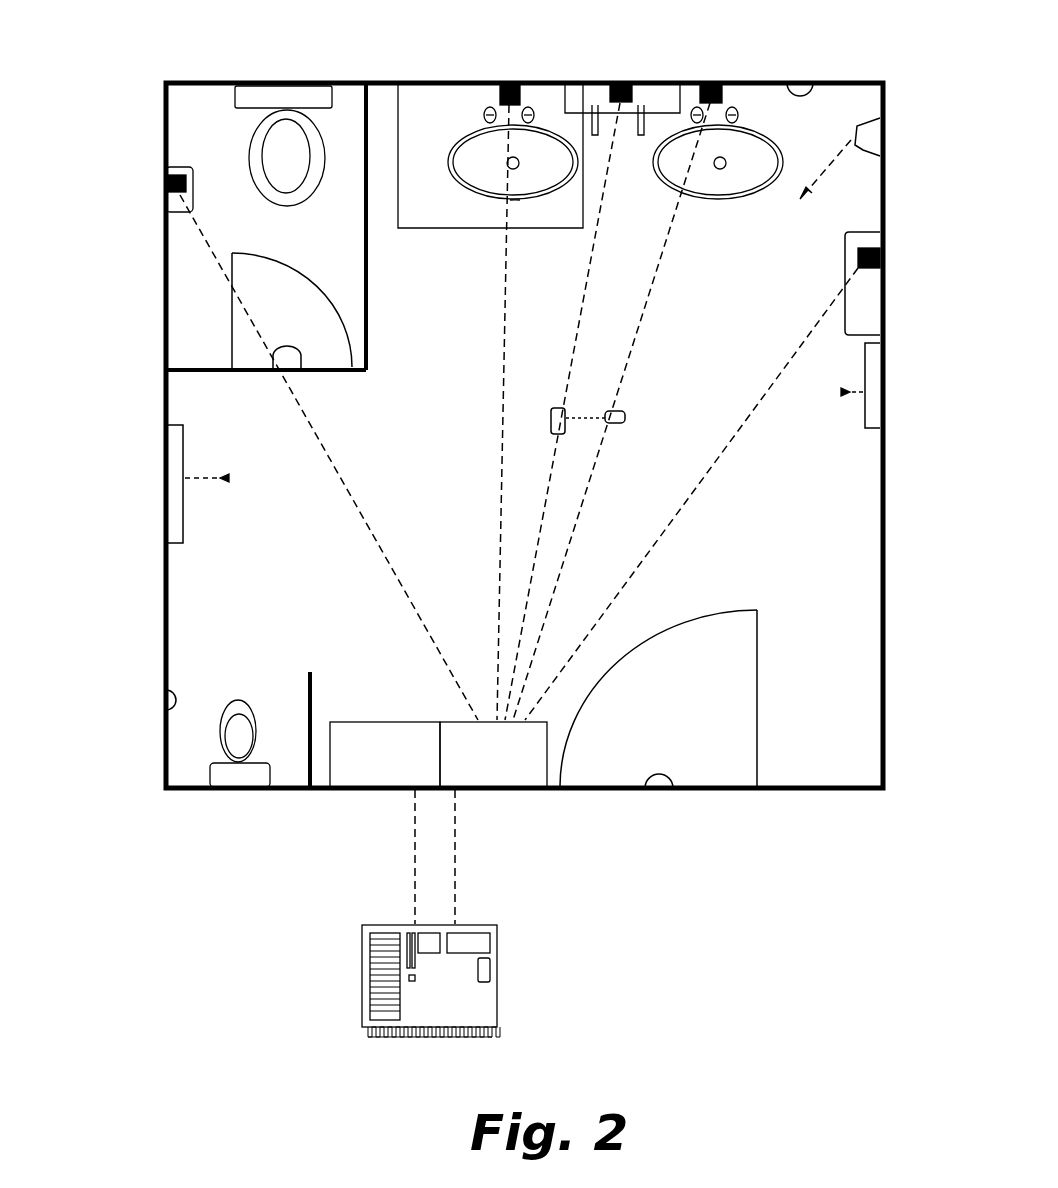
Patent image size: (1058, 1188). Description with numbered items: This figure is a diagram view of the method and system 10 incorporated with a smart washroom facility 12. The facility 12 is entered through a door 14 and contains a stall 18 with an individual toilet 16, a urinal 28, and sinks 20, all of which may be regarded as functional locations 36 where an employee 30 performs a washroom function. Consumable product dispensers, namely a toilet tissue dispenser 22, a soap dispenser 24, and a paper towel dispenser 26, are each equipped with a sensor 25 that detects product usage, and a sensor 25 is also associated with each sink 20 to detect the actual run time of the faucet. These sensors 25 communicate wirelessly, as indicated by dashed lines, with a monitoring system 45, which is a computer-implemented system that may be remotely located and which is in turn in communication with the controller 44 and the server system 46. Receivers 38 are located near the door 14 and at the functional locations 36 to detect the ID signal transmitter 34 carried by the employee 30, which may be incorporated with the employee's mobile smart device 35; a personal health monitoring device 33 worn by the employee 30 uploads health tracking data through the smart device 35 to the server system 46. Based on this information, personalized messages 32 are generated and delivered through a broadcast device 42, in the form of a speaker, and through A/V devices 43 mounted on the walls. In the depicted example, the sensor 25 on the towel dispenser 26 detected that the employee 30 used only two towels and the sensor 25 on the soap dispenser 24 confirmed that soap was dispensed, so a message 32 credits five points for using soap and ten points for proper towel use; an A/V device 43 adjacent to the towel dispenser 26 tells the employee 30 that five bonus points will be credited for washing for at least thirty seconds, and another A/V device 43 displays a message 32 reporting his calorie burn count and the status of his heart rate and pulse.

The system 10 is at (130, 62).
The washroom facility 12 is at (893, 516).
The door 14 is at (759, 682).
The toilet 16 is at (283, 162).
The stall 18 is at (368, 242).
The sink 20 is at (455, 148).
The toilet tissue dispenser 22 is at (193, 180).
The soap dispenser 24 is at (622, 112).
The sensor 25 is at (165, 178).
The paper towel dispenser 26 is at (882, 292).
The urinal 28 is at (256, 738).
The employee 30 is at (540, 350).
The personalized message 32 is at (748, 278).
The personal health monitoring device 33 is at (626, 415).
The ID signal transmitter 34 is at (542, 418).
The mobile smart device 35 is at (570, 416).
The functional location 36 is at (285, 348).
The receiver 38 is at (787, 80).
The broadcast device 42 is at (880, 137).
The A/V device 43 is at (882, 410).
The controller 44 is at (350, 720).
The monitoring system 45 is at (448, 720).
The server system 46 is at (499, 972).